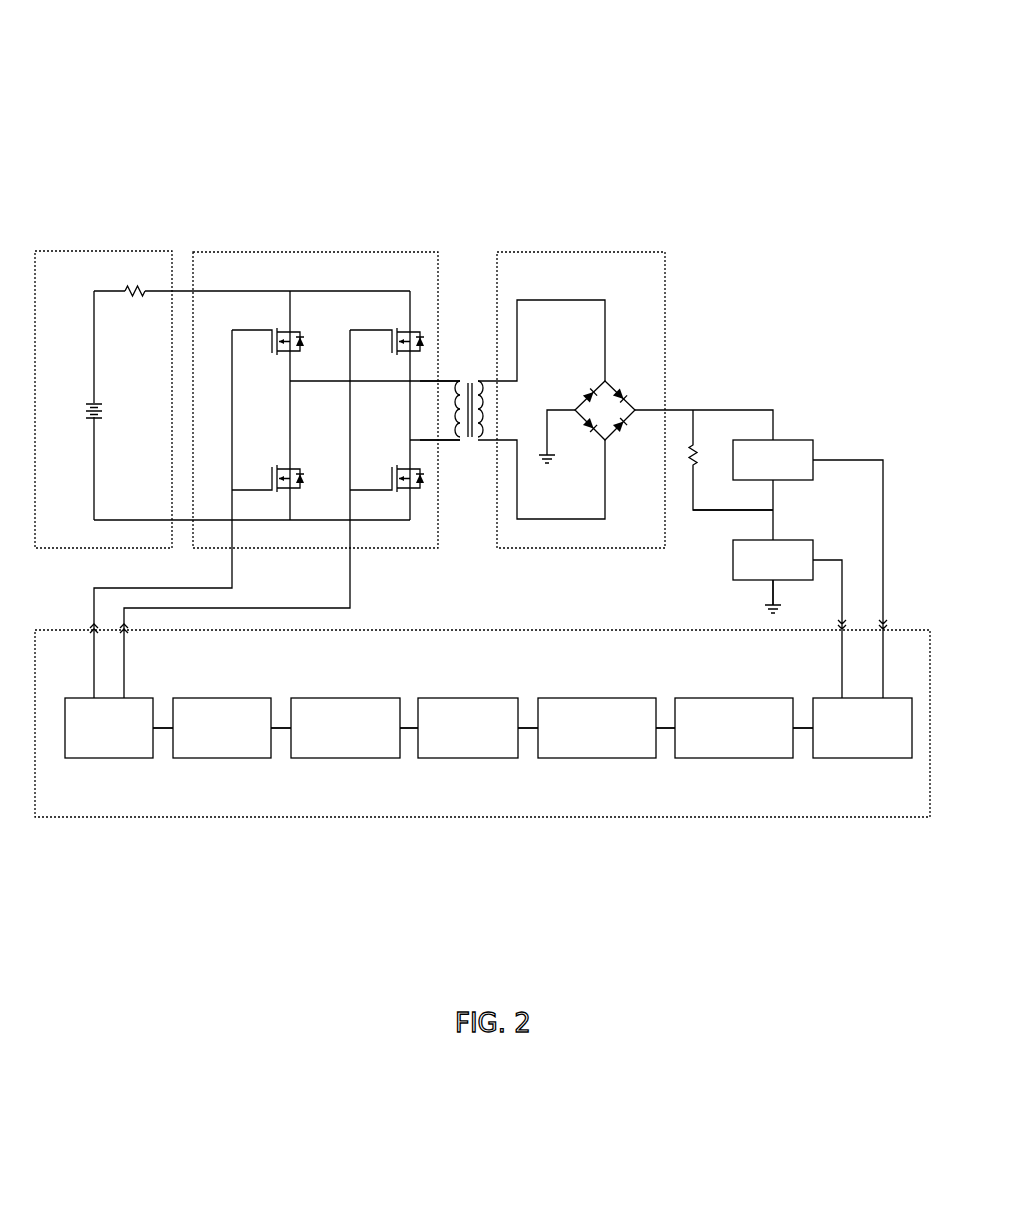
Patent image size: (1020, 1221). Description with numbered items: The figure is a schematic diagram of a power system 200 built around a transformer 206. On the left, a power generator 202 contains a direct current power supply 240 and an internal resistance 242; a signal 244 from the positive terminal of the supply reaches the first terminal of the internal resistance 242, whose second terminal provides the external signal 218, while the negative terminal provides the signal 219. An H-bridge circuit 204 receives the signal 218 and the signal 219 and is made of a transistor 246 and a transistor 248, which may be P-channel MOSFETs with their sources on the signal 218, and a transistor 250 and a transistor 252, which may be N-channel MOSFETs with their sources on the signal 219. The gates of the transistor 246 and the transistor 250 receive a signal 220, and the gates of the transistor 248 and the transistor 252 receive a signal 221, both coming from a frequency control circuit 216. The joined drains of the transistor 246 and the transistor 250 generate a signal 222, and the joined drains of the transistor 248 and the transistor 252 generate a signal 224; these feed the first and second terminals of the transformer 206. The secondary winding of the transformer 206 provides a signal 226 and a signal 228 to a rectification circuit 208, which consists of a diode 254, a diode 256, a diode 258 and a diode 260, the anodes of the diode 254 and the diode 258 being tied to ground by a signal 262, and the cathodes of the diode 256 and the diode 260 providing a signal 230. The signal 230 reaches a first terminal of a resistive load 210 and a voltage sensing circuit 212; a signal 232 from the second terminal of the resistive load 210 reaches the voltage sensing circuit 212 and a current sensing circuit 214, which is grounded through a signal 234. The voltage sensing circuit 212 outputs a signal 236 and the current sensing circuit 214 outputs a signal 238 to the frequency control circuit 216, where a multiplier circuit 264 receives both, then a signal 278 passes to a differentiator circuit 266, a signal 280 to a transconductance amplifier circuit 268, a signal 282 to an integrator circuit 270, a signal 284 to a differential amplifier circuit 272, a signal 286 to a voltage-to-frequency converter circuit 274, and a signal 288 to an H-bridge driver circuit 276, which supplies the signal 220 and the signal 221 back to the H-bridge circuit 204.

The power system 200 is at (216, 70).
The power generator 202 is at (97, 249).
The H-bridge circuit 204 is at (259, 249).
The transformer 206 is at (467, 442).
The rectification circuit 208 is at (590, 249).
The resistive load 210 is at (699, 450).
The voltage sensing circuit 212 is at (815, 444).
The current sensing circuit 214 is at (815, 544).
The frequency control circuit 216 is at (151, 822).
The signal 218 is at (186, 289).
The signal 219 is at (186, 518).
The signal 220 is at (88, 608).
The signal 221 is at (136, 614).
The signal 222 is at (447, 379).
The signal 224 is at (446, 442).
The signal 226 is at (488, 379).
The signal 228 is at (488, 442).
The signal 230 is at (692, 407).
The signal 232 is at (703, 513).
The signal 234 is at (760, 598).
The signal 236 is at (887, 488).
The signal 238 is at (838, 573).
The direct current power supply 240 is at (88, 402).
The internal resistance 242 is at (128, 289).
The signal 244 is at (98, 334).
The transistor 246 is at (278, 334).
The transistor 248 is at (400, 334).
The transistor 250 is at (282, 470).
The transistor 252 is at (398, 470).
The diode 254 is at (585, 390).
The diode 256 is at (624, 390).
The diode 258 is at (588, 431).
The diode 260 is at (626, 432).
The signal 262 is at (544, 432).
The multiplier circuit 264 is at (868, 762).
The differentiator circuit 266 is at (741, 696).
The transconductance amplifier circuit 268 is at (598, 696).
The integrator circuit 270 is at (484, 696).
The differential amplifier circuit 272 is at (364, 696).
The voltage-to-frequency converter circuit 274 is at (244, 696).
The H-bridge driver circuit 276 is at (138, 761).
The signal 278 is at (800, 742).
The signal 280 is at (662, 742).
The signal 282 is at (527, 742).
The signal 284 is at (408, 742).
The signal 286 is at (281, 742).
The signal 288 is at (163, 742).